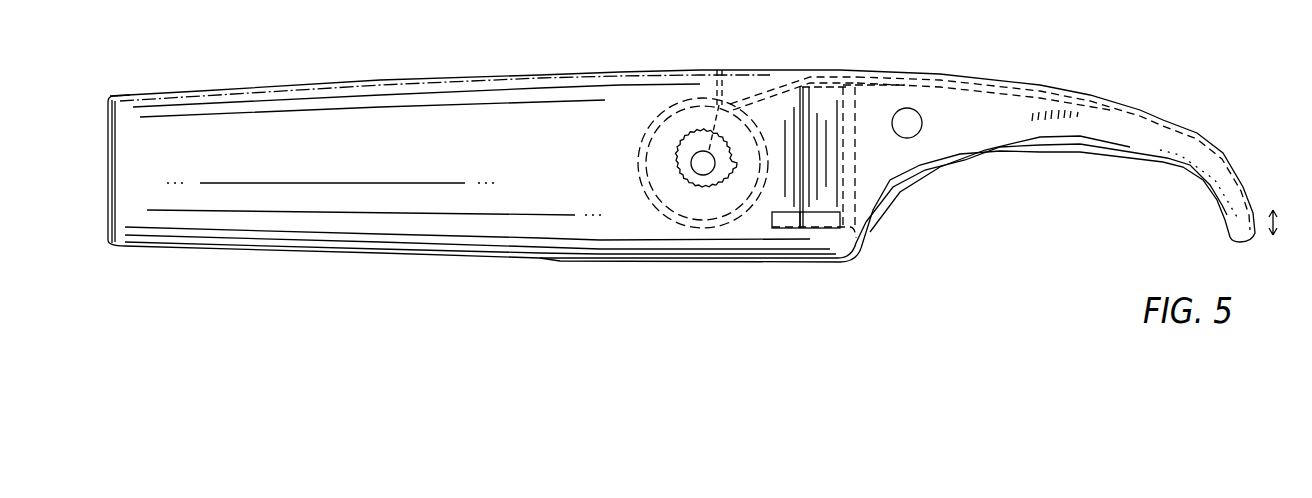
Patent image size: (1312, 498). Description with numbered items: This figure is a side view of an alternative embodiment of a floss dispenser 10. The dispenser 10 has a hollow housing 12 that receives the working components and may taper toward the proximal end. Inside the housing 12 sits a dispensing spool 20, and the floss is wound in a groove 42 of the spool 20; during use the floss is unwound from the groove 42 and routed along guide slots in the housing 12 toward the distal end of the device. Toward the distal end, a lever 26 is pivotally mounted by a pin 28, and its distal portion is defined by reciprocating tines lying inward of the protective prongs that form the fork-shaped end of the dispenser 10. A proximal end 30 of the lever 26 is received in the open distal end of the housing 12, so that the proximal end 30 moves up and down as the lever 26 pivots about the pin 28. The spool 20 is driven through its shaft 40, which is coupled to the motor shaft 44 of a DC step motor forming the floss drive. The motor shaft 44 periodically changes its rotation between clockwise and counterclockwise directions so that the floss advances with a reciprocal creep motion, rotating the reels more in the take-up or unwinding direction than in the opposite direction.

The floss dispenser 10 is at (250, 35).
The housing 12 is at (328, 252).
The dispensing spool 20 is at (639, 178).
The lever 26 is at (1157, 166).
The pin 28 is at (920, 120).
The proximal end of lever 30 is at (825, 228).
The shaft 40 is at (693, 158).
The groove 42 is at (758, 132).
The motor shaft 44 is at (717, 88).